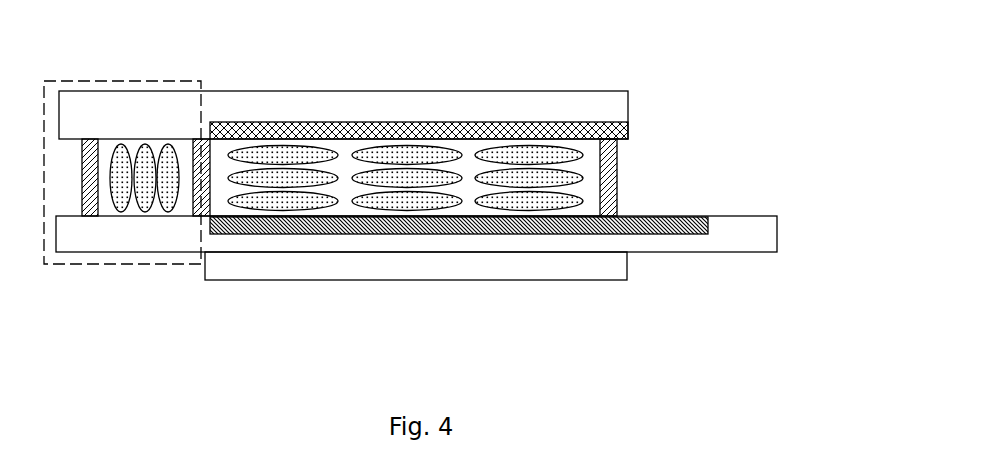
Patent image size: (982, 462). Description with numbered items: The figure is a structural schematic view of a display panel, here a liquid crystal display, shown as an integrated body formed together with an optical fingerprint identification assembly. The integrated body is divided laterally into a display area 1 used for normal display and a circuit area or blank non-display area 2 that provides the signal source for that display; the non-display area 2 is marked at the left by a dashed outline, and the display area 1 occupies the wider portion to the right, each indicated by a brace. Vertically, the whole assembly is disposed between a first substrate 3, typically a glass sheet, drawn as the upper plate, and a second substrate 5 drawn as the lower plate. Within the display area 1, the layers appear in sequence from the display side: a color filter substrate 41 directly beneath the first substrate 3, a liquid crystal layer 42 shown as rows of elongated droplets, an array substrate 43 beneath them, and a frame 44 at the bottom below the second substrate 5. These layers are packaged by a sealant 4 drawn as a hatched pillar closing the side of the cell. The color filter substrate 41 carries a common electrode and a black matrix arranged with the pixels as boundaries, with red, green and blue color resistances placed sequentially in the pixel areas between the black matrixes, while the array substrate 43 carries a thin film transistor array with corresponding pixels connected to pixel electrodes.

The display area 1 is at (207, 78).
The non-display area 2 is at (62, 78).
The first substrate 3 is at (607, 105).
The sealant 4 is at (615, 202).
The second substrate 5 is at (725, 230).
The color filter substrate 41 is at (617, 130).
The liquid crystal layer 42 is at (563, 182).
The array substrate 43 is at (438, 234).
The frame 44 is at (607, 267).